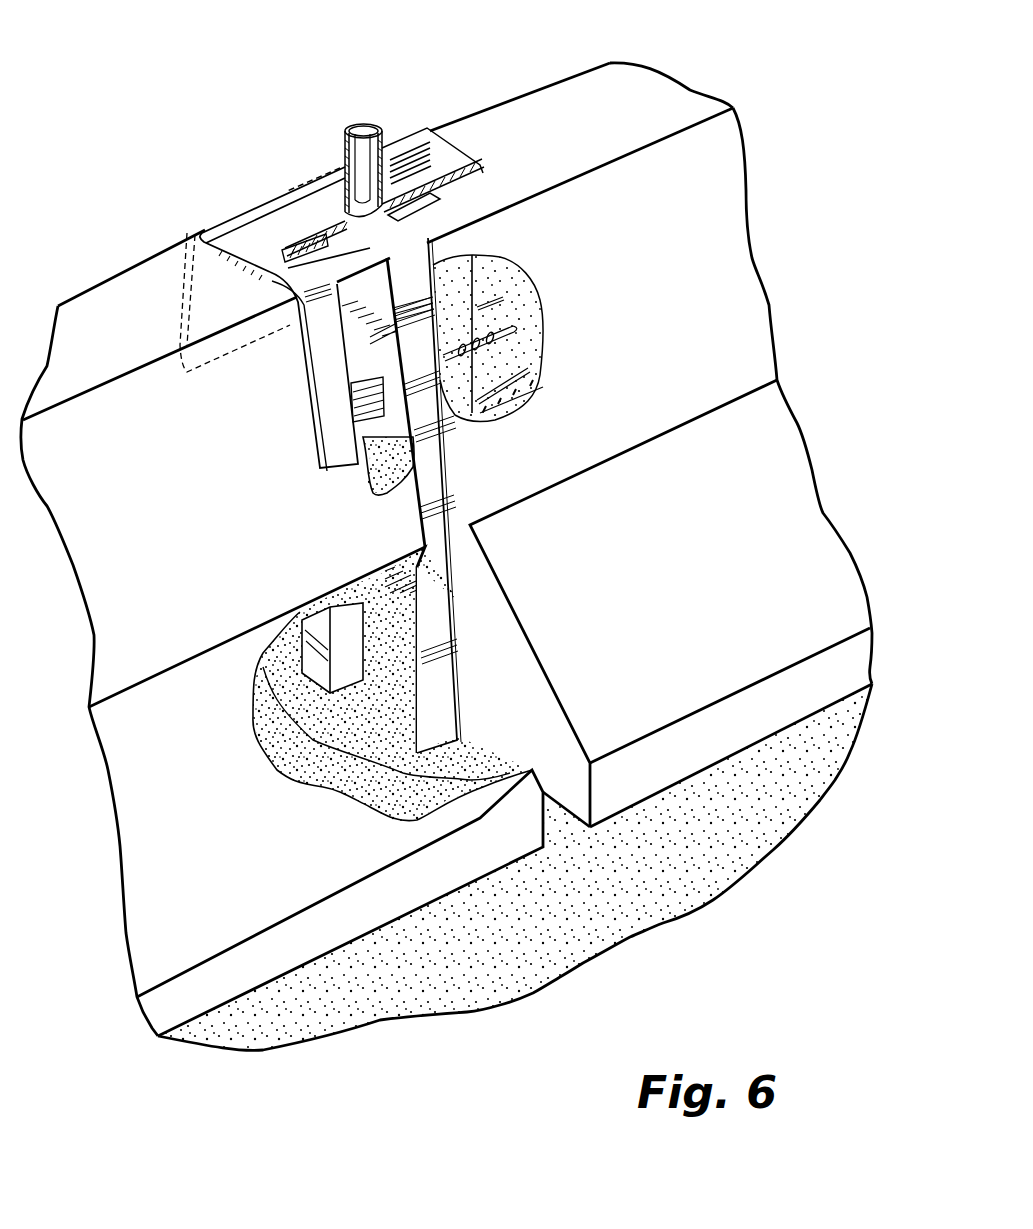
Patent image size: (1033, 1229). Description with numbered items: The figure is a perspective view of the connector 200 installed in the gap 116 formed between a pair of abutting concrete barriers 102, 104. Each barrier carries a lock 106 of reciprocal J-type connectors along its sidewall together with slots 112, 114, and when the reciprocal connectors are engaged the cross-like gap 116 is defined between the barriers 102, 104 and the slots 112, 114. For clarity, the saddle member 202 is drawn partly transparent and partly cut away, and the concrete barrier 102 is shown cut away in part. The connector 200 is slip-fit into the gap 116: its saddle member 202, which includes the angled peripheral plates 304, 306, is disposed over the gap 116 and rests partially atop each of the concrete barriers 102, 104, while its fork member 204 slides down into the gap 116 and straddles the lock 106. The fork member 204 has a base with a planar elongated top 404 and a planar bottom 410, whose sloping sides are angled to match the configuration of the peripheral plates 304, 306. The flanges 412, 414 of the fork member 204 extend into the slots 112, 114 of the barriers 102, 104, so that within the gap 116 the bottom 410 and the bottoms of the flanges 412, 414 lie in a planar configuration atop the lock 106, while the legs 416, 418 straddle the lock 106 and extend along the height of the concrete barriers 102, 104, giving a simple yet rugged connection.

The concrete barrier 102 is at (78, 292).
The concrete barrier 104 is at (567, 76).
The lock 106 is at (370, 404).
The slot 112 is at (437, 163).
The slot 114 is at (305, 258).
The gap 116 is at (316, 237).
The connector 200 is at (189, 80).
The saddle member 202 is at (216, 220).
The fork member 204 is at (441, 285).
The peripheral plate 304 is at (185, 285).
The peripheral plate 306 is at (342, 467).
The elongated top 404 is at (331, 200).
The bottom 410 is at (353, 393).
The flange 412 is at (403, 213).
The flange 414 is at (299, 232).
The leg 416 is at (319, 614).
The leg 418 is at (442, 697).